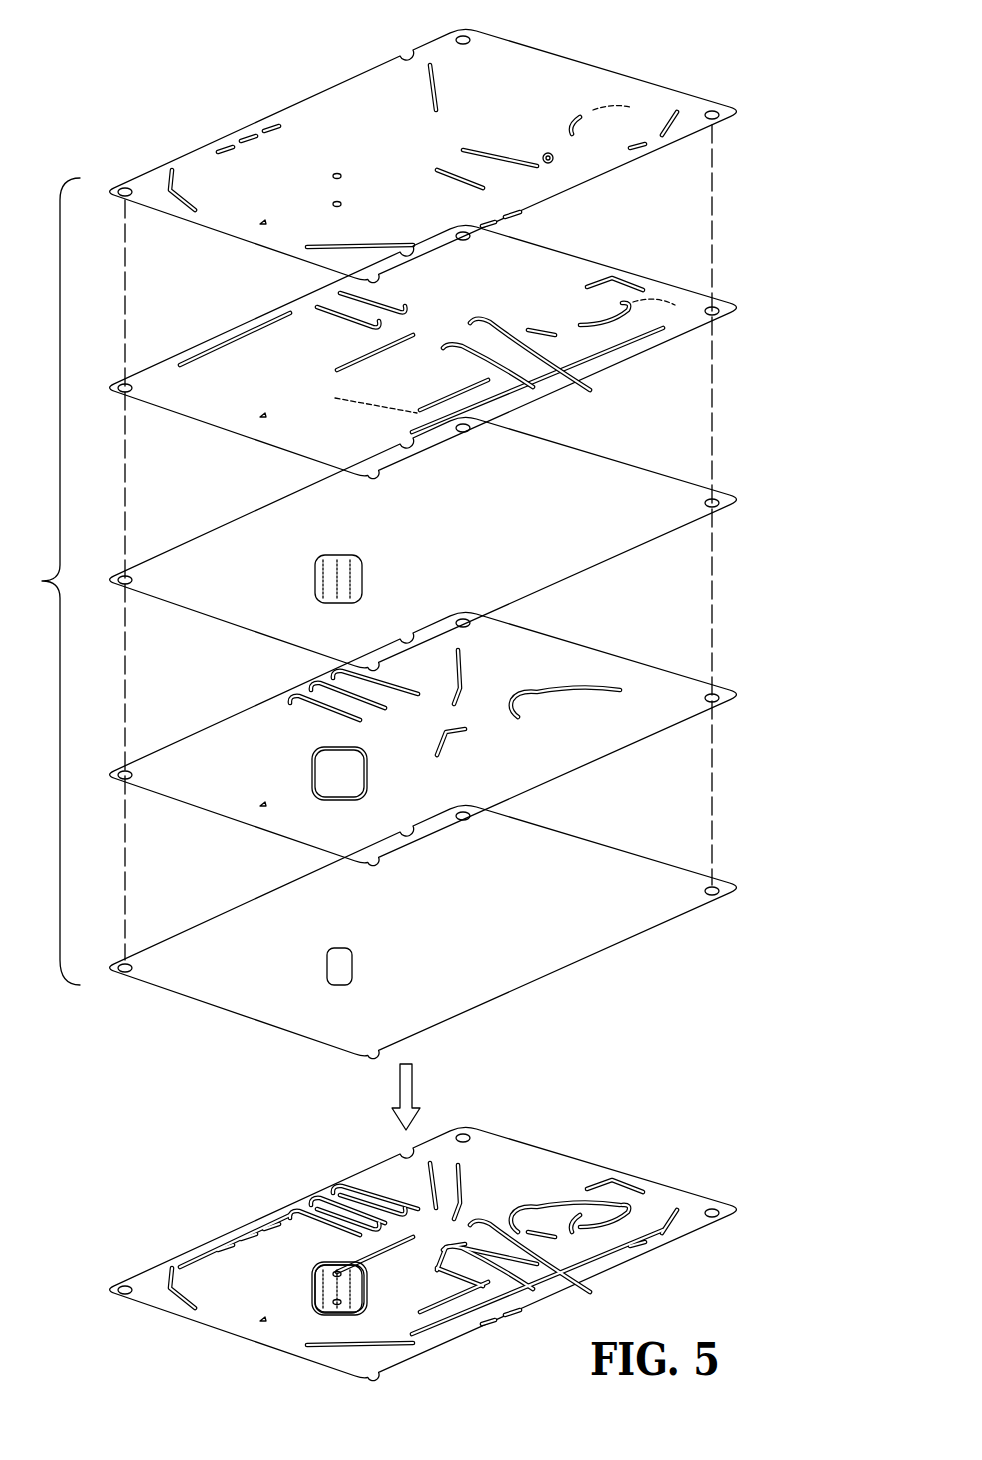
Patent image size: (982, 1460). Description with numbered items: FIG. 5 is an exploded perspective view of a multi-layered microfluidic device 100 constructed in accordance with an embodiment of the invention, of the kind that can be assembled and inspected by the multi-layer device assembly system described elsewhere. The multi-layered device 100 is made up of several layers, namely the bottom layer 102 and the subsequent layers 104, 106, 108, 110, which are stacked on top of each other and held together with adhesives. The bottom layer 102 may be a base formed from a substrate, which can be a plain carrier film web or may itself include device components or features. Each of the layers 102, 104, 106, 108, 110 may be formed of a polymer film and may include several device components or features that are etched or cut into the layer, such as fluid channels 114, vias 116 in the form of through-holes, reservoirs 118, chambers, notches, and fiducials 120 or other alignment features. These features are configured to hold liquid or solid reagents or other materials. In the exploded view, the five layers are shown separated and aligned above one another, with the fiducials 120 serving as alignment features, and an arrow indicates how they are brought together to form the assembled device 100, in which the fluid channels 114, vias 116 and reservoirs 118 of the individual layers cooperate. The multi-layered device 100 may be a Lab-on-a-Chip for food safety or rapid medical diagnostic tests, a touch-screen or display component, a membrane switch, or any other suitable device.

The multi-layered microfluidic device 100 is at (636, 1120).
The bottom layer 102 is at (626, 984).
The layer 104 is at (626, 789).
The layer 106 is at (626, 594).
The layer 108 is at (626, 399).
The layer 110 is at (626, 204).
The fluid channels 114 is at (552, 162).
The vias 116 is at (448, 348).
The reservoirs 118 is at (333, 570).
The fiducials 120 is at (463, 36).